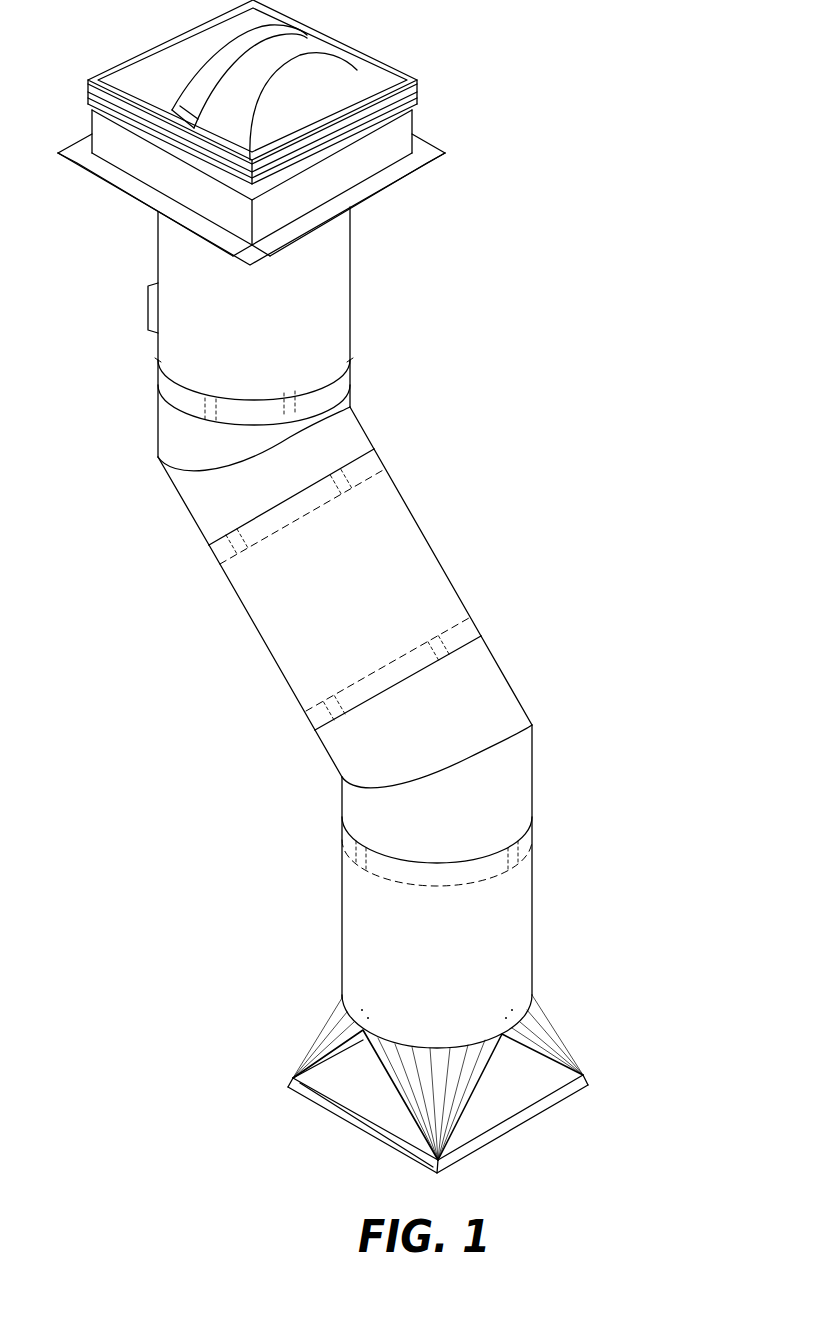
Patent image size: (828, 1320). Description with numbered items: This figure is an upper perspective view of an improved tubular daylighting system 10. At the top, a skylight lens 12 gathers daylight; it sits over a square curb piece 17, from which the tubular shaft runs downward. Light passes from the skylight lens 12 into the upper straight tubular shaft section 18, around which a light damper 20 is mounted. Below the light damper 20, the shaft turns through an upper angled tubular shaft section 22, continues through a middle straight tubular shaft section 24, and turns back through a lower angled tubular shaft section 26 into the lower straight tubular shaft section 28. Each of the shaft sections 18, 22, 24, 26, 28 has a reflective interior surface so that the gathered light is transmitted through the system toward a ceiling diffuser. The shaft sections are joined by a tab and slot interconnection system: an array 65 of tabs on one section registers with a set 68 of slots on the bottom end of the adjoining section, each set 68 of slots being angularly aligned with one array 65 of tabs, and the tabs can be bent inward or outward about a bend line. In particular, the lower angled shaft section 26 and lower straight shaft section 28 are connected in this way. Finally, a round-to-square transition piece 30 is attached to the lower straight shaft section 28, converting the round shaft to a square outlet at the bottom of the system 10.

The tubular daylighting system 10 is at (603, 364).
The skylight lens 12 is at (357, 72).
The square curb piece 17 is at (413, 127).
The upper straight tubular shaft section 18 is at (350, 303).
The light damper 20 is at (350, 373).
The upper angled tubular shaft section 22 is at (360, 430).
The middle straight tubular shaft section 24 is at (420, 527).
The lower angled tubular shaft section 26 is at (525, 705).
The lower straight tubular shaft section 28 is at (533, 920).
The round-to-square transition piece 30 is at (560, 1040).
The array of tabs 65 is at (360, 470).
The set of slots 68 is at (455, 636).